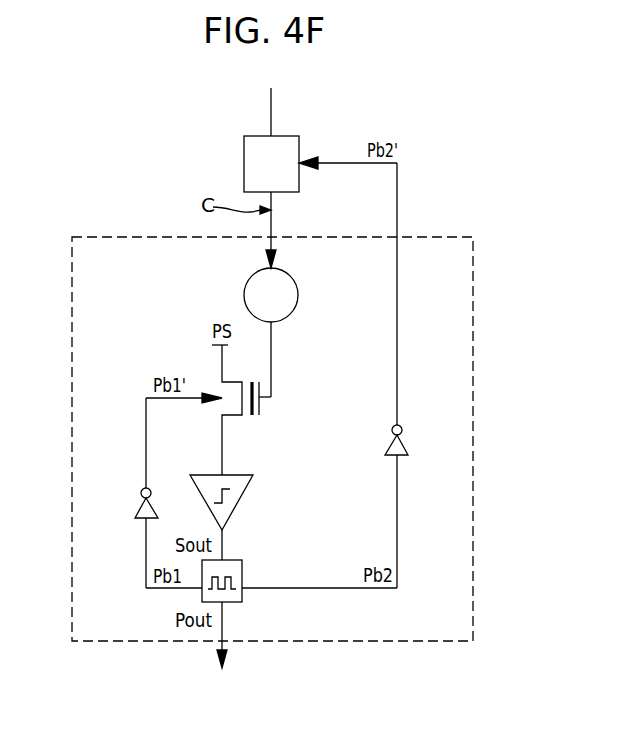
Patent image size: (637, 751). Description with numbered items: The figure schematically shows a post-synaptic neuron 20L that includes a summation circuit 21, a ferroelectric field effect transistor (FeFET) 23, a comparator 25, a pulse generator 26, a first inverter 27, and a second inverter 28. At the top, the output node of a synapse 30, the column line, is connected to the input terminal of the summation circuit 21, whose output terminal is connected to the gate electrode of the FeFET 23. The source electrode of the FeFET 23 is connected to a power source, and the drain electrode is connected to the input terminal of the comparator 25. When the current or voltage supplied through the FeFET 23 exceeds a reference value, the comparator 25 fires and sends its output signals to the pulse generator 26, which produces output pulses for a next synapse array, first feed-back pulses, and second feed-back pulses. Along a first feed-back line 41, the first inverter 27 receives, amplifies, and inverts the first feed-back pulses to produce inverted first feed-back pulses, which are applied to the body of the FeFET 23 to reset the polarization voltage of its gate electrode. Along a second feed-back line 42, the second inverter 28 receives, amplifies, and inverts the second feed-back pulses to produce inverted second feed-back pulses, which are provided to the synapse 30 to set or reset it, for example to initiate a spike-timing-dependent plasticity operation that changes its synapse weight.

The post-synaptic neuron 20L is at (117, 268).
The synapse 30 is at (299, 140).
The summation circuit 21 is at (296, 308).
The ferroelectric field effect transistor (FeFET) 23 is at (276, 426).
The comparator 25 is at (243, 495).
The pulse generator 26 is at (242, 568).
The first inverter 27 is at (141, 493).
The second inverter 28 is at (403, 432).
The first feed-back line 41 is at (140, 431).
The second feed-back line 42 is at (403, 364).